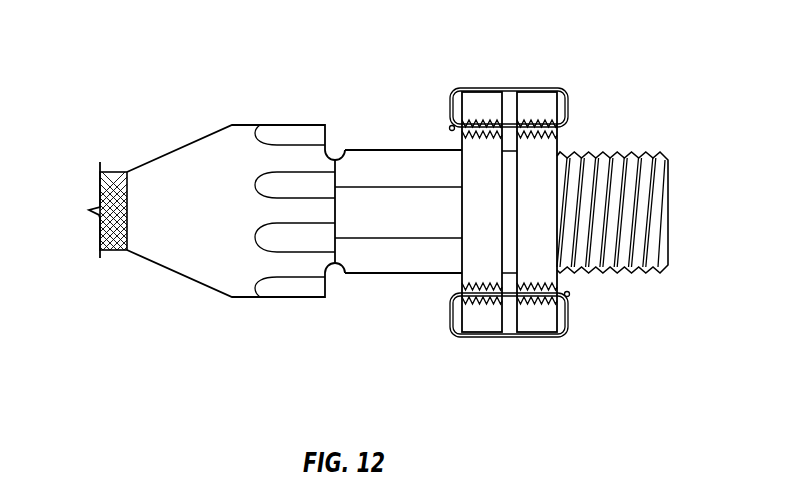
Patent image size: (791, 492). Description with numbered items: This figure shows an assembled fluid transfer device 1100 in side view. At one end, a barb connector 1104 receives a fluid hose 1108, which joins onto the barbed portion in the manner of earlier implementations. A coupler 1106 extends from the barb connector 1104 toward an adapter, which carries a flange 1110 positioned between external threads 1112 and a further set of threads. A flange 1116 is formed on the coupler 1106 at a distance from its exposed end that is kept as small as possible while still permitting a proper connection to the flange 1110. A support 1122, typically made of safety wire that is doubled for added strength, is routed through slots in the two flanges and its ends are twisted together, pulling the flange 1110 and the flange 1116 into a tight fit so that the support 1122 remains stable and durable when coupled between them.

The fluid transfer device 1100 is at (207, 36).
The barb connector 1104 is at (243, 298).
The coupler 1106 is at (418, 278).
The fluid hose 1108 is at (108, 250).
The flange 1110 is at (558, 280).
The external threads 1112 is at (618, 155).
The flange 1116 is at (460, 148).
The support 1122 is at (508, 128).